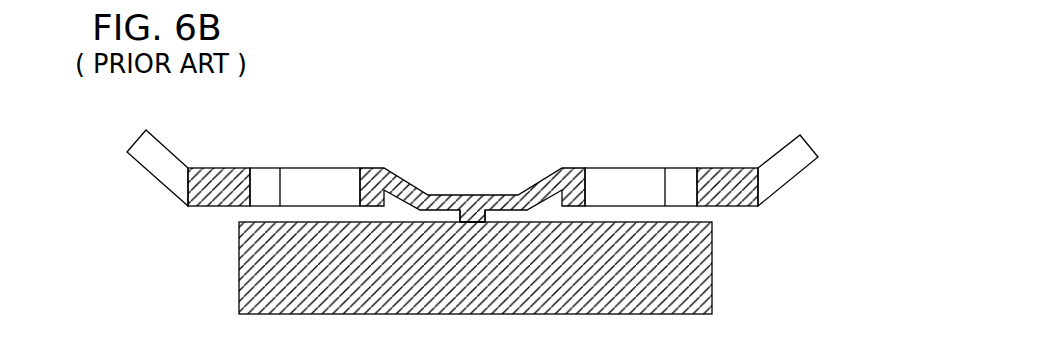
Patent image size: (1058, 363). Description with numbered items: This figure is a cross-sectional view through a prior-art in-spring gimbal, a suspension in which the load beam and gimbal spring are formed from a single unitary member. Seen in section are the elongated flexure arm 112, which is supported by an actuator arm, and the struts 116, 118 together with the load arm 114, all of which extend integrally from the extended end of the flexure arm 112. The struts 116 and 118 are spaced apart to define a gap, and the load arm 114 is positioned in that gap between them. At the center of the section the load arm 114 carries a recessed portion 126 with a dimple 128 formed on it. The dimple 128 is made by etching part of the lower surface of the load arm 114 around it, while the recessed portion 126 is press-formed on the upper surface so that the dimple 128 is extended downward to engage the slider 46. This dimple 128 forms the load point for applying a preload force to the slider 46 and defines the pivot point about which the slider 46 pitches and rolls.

The slider 46 is at (709, 268).
The elongated flexure arm 112 is at (146, 130).
The load arm 114 is at (322, 180).
The strut 116 is at (722, 172).
The strut 118 is at (217, 172).
The recessed portion 126 is at (456, 183).
The dimple 128 is at (493, 204).